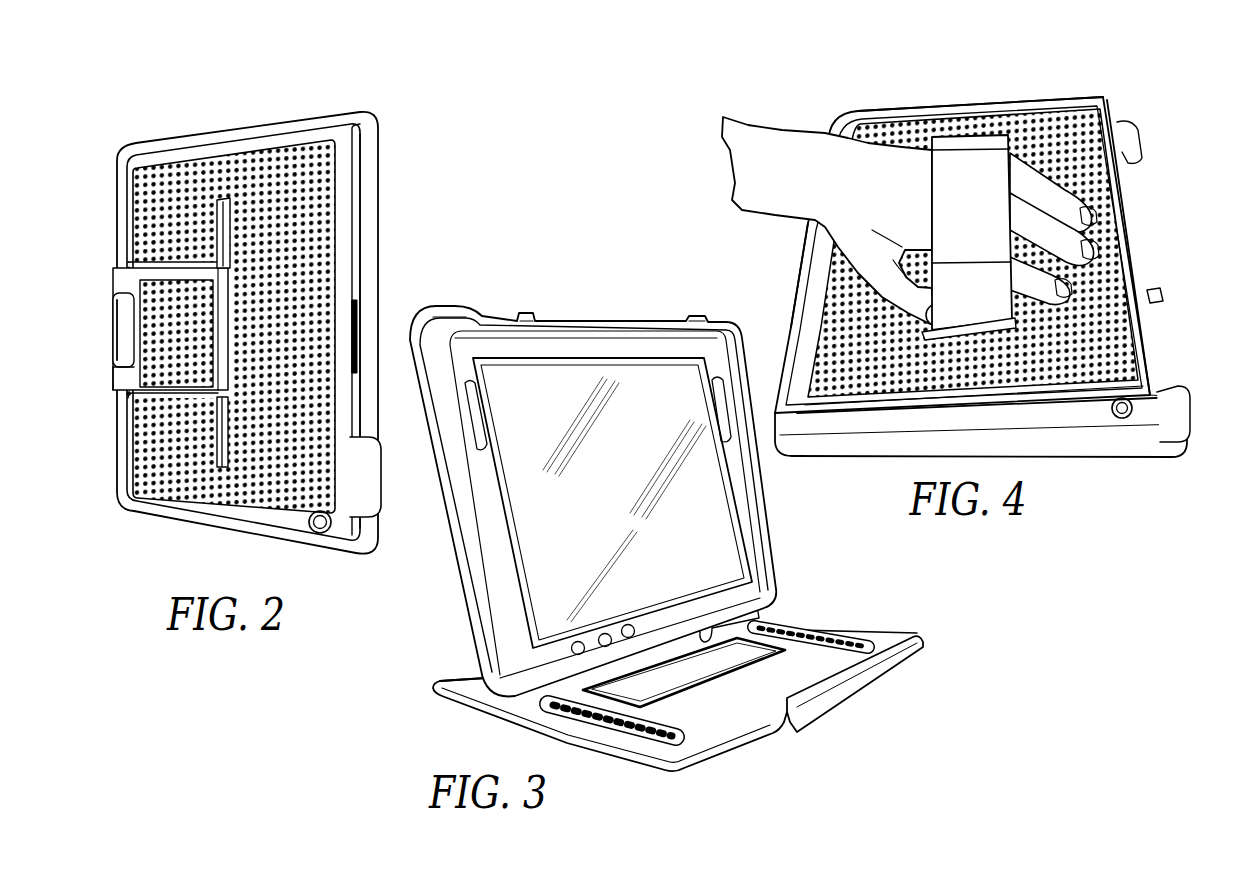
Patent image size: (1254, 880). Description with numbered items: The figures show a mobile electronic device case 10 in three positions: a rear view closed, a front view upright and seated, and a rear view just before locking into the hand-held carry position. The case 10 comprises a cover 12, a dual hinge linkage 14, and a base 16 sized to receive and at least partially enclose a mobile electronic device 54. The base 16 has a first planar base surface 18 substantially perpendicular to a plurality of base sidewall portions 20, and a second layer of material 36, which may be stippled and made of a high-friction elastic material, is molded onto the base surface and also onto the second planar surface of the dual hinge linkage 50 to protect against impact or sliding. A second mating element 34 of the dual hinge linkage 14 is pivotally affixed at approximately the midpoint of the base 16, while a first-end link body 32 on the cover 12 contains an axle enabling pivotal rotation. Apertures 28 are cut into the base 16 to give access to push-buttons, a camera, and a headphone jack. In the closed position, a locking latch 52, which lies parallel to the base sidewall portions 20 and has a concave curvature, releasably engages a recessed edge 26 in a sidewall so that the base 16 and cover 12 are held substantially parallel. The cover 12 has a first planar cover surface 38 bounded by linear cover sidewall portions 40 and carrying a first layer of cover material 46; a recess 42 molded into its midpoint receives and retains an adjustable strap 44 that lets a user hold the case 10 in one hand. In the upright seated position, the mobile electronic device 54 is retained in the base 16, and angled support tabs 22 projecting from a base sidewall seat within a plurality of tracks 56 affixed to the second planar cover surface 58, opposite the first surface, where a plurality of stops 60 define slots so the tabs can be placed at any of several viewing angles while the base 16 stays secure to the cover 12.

In FIG. 2, the mobile electronic device case 10 is at (146, 121).
In FIG. 3, the mobile electronic device case 10 is at (555, 301).
In FIG. 4, the mobile electronic device case 10 is at (968, 96).
In FIG. 3, the cover 12 is at (693, 772).
In FIG. 4, the cover 12 is at (1102, 100).
In FIG. 2, the dual hinge linkage 14 is at (119, 372).
In FIG. 2, the base 16 is at (327, 120).
In FIG. 3, the base 16 is at (680, 318).
In FIG. 4, the base 16 is at (1105, 438).
In FIG. 2, the first planar base surface 18 is at (131, 155).
In FIG. 4, the first planar base surface 18 is at (1052, 418).
In FIG. 2, the base sidewall portions 20 is at (379, 202).
In FIG. 3, the base sidewall portions 20 is at (452, 545).
In FIG. 3, the support tabs 22 is at (543, 701).
In FIG. 2, the recessed edge 26 is at (368, 299).
In FIG. 2, the apertures 28 is at (366, 484).
In FIG. 4, the apertures 28 is at (1173, 372).
In FIG. 4, the first-end link body 32 is at (1152, 276).
In FIG. 2, the second mating element 34 is at (218, 362).
In FIG. 2, the second layer of material 36 is at (222, 168).
In FIG. 4, the second layer of material 36 is at (880, 125).
In FIG. 4, the first at least substantially planar cover surface 38 is at (1030, 107).
In FIG. 3, the cover sidewall portions 40 is at (614, 750).
In FIG. 4, the cover sidewall portions 40 is at (840, 124).
In FIG. 4, the recess 42 is at (1166, 294).
In FIG. 4, the adjustable strap 44 is at (1010, 200).
In FIG. 4, the first layer of cover material 46 is at (1123, 131).
In FIG. 2, the second planar surface of the dual hinge linkage 50 is at (114, 292).
In FIG. 2, the locking latch 52 is at (392, 316).
In FIG. 3, the locking latch 52 is at (830, 710).
In FIG. 4, the locking latch 52 is at (797, 290).
In FIG. 3, the mobile electronic device 54 is at (612, 503).
In FIG. 3, the tracks 56 is at (565, 716).
In FIG. 3, the second at least substantially planar cover surface 58 is at (824, 656).
In FIG. 3, the stops 60 is at (588, 729).